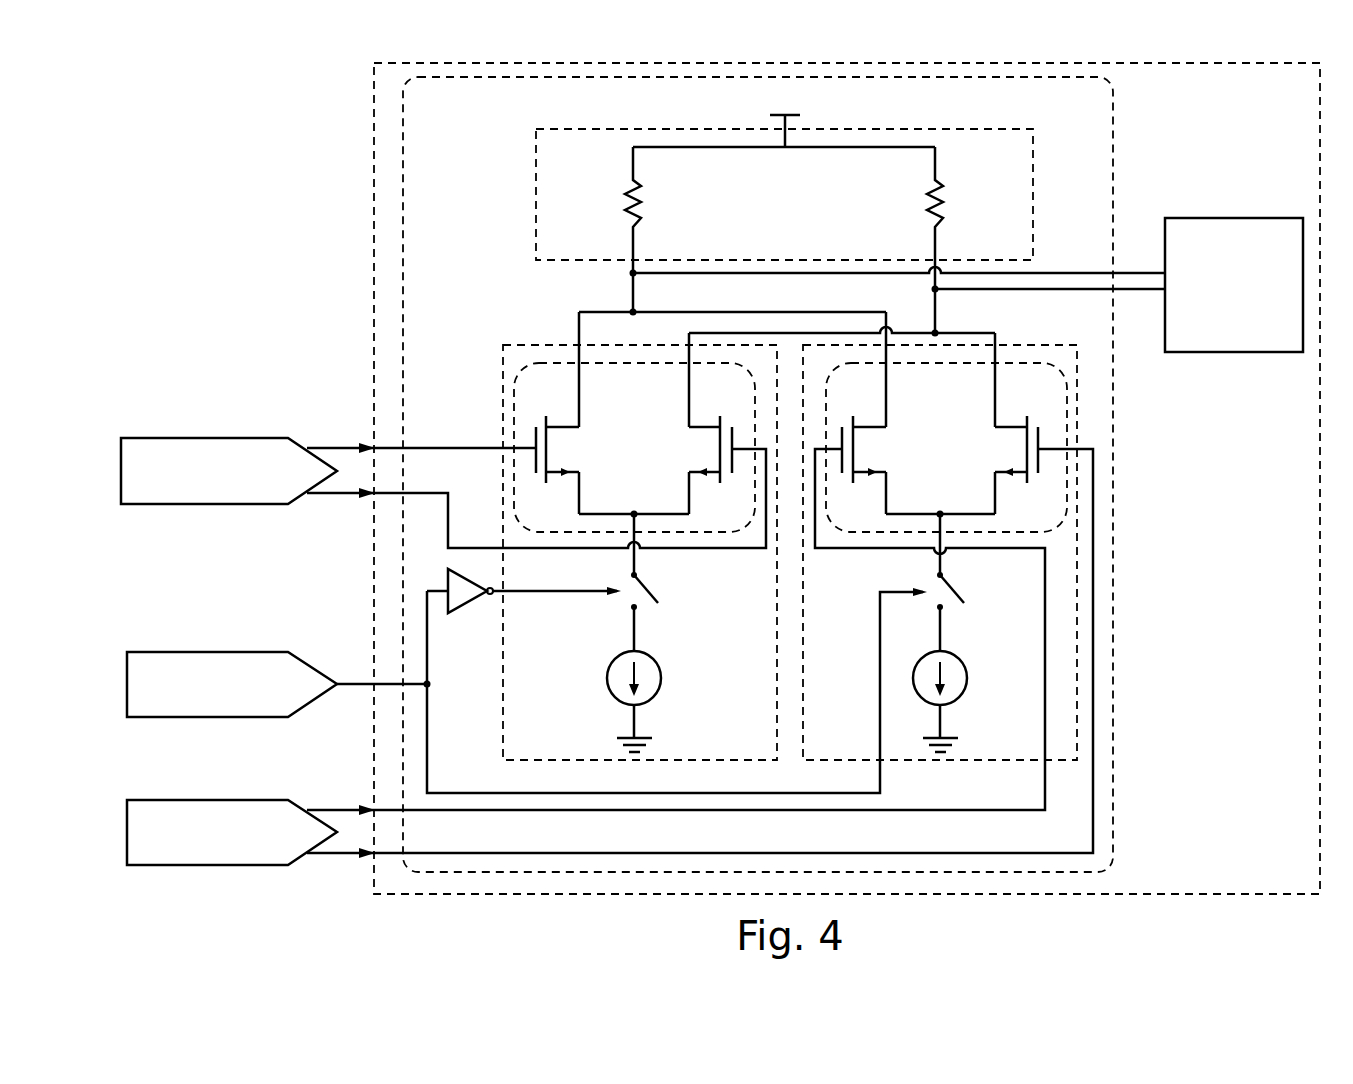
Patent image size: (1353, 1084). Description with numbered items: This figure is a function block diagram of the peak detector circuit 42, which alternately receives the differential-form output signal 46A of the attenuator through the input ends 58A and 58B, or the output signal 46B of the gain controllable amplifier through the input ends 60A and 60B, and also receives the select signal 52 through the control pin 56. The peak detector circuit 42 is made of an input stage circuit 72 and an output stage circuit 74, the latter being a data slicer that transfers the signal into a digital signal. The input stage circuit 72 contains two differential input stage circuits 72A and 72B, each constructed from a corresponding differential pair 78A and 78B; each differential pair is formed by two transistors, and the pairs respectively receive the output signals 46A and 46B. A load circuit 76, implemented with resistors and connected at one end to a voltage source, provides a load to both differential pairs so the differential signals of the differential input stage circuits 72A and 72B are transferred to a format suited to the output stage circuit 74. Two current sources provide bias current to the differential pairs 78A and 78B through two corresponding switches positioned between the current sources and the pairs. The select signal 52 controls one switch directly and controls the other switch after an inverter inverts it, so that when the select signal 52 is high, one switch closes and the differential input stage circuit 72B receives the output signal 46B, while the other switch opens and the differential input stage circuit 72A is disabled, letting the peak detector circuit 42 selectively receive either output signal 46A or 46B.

The peak detector circuit 42 is at (374, 248).
The input stage circuit 72 is at (1110, 598).
The differential input stage circuit 72A is at (598, 531).
The differential input stage circuit 72B is at (983, 531).
The output stage circuit 74 is at (1235, 218).
The load circuit 76 is at (536, 165).
The differential pair 78A is at (514, 418).
The differential pair 78B is at (1067, 428).
The output signal 46A is at (160, 438).
The output signal 46B is at (155, 800).
The select signal 52 is at (178, 652).
The control pin 56 is at (365, 682).
The input end 58A is at (345, 445).
The input end 58B is at (345, 497).
The input end 60A is at (350, 808).
The input end 60B is at (350, 857).